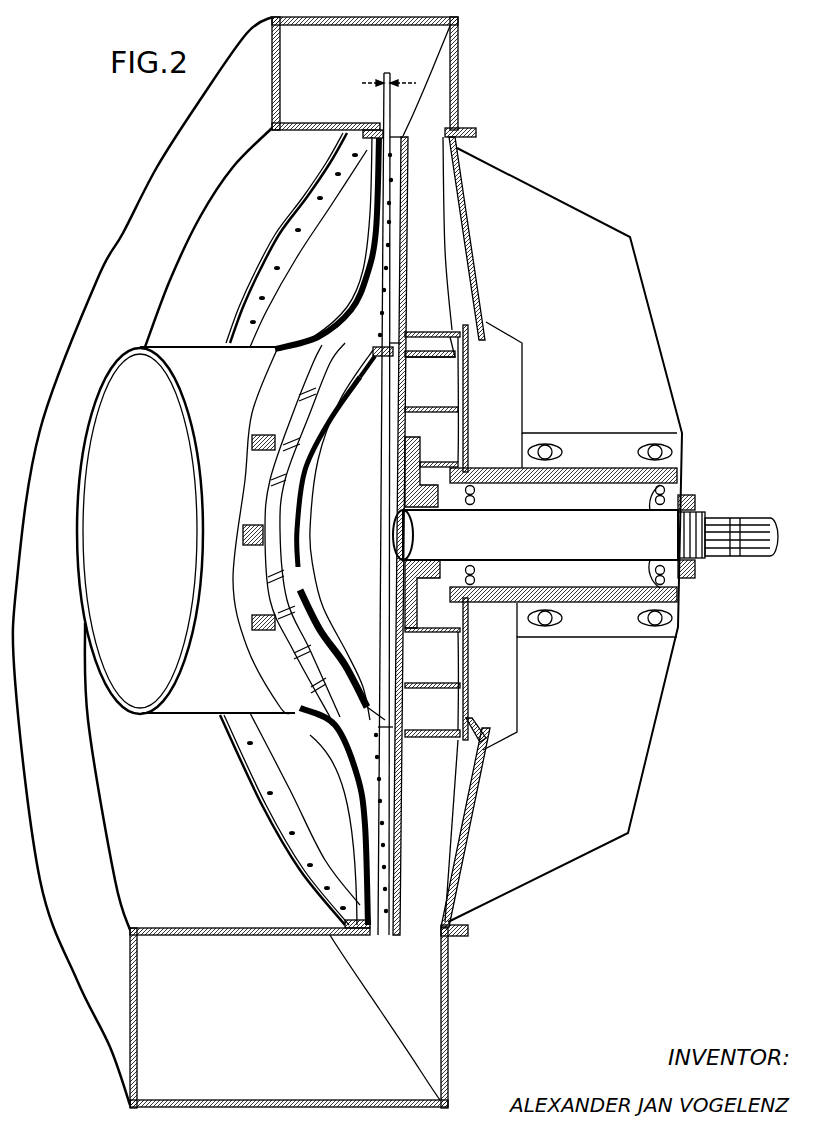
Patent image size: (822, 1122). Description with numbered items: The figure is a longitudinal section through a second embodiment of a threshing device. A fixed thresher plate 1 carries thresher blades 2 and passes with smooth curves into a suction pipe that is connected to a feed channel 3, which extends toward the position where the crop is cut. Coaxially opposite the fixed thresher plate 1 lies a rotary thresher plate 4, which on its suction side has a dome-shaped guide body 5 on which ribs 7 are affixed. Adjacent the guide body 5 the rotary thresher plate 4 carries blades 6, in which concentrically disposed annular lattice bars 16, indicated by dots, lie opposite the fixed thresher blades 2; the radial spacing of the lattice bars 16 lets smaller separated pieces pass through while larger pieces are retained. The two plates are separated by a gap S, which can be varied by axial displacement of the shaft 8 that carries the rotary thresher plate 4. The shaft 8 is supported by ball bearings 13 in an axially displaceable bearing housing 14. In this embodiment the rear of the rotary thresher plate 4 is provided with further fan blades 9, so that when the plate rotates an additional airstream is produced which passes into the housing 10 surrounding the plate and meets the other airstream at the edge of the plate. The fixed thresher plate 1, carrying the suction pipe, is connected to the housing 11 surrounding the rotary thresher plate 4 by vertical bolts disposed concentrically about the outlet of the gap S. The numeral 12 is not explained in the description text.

The fixed thresher plate 1 is at (372, 214).
The thresher blades 2 is at (314, 348).
The feed channel 3 is at (198, 366).
The rotary thresher plate 4 is at (402, 425).
The dome-shaped guide body 5 is at (303, 527).
The blades 6 is at (400, 792).
The ribs 7 is at (318, 603).
The shaft 8 is at (694, 502).
The fan blades 9 is at (440, 847).
The housing 10 is at (432, 1040).
The housing 11 is at (476, 283).
The bearing bracket 12 is at (504, 400).
The ball bearings 13 is at (682, 583).
The bearing housing 14 is at (588, 598).
The annular lattice bars 16 is at (386, 266).
The gap S is at (382, 92).